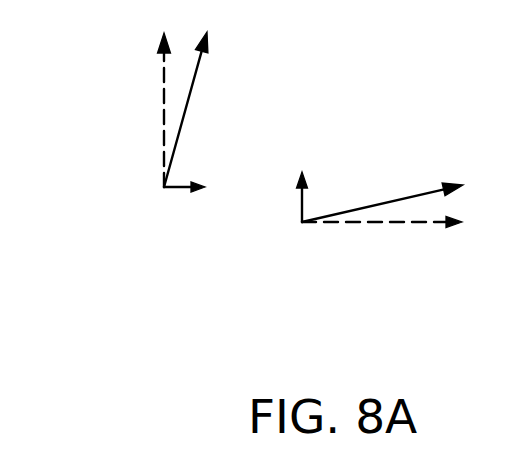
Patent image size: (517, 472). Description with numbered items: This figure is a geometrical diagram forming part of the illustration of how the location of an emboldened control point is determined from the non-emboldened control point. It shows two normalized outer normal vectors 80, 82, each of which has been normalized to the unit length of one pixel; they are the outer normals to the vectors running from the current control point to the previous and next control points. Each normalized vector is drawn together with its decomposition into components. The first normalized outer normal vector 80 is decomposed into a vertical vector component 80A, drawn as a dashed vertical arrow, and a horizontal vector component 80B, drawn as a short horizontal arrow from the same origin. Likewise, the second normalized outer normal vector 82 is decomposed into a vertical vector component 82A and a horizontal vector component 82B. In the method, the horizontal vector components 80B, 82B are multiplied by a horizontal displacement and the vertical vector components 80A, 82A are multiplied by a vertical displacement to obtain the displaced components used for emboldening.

The normalized outer normal vector 80 is at (203, 68).
The vertical vector component 80A is at (157, 118).
The horizontal vector component 80B is at (177, 197).
The normalized outer normal vector 82 is at (430, 182).
The vertical vector component 82A is at (307, 192).
The horizontal vector component 82B is at (382, 230).